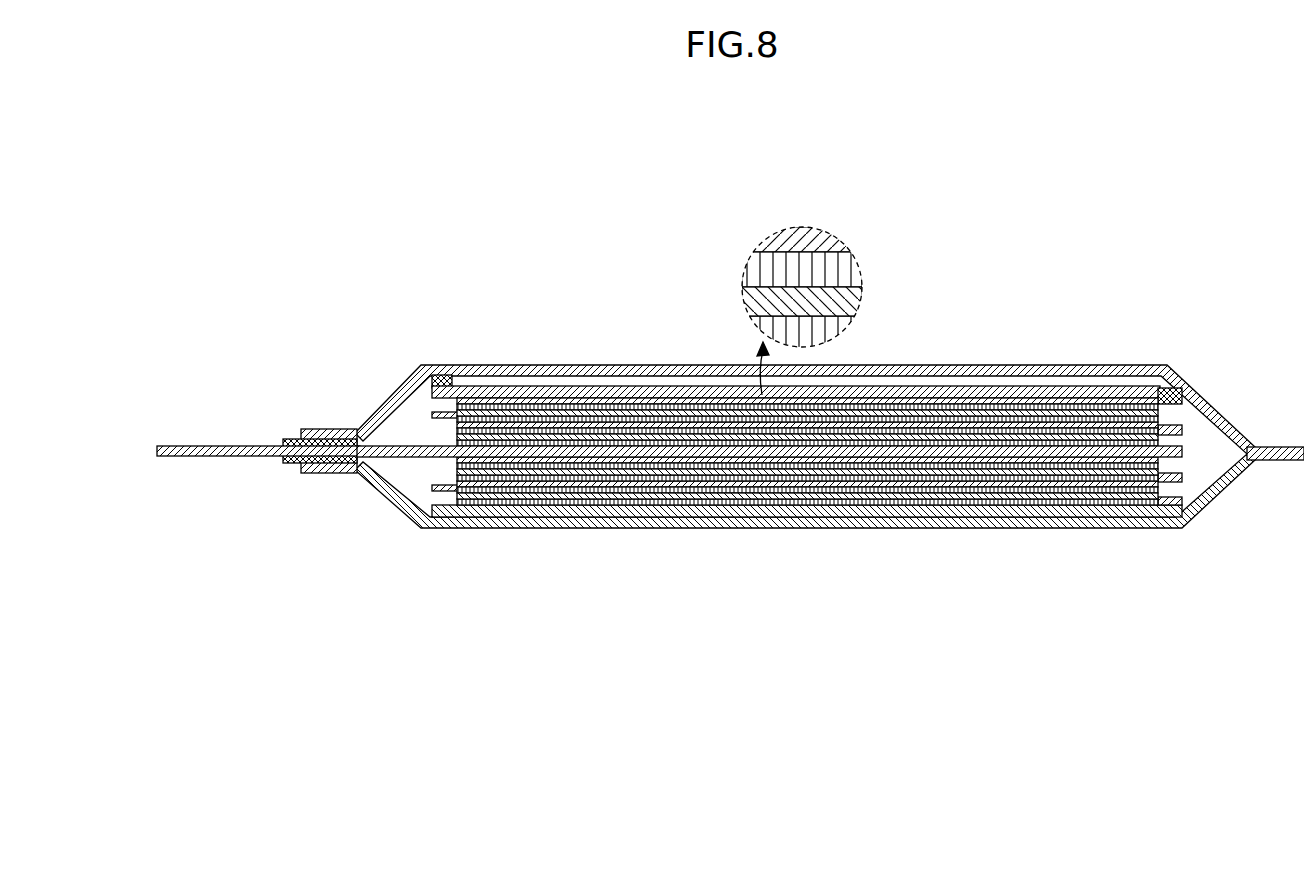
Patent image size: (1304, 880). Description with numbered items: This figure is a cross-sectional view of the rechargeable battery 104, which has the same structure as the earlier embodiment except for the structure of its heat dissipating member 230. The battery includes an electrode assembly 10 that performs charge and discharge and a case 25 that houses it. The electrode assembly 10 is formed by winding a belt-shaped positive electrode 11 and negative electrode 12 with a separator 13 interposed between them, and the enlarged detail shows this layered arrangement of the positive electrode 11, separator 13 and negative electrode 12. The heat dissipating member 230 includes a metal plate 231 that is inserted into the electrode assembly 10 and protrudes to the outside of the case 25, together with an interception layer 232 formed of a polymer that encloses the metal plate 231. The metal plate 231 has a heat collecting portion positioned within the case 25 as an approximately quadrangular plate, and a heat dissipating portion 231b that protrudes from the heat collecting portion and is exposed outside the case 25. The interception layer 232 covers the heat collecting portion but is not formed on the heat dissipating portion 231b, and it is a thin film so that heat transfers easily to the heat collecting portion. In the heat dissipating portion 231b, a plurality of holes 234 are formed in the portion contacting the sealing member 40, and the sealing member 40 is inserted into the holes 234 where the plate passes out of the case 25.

The rechargeable battery 104 is at (714, 117).
The electrode assembly 10 is at (807, 336).
The positive electrode 11 is at (528, 400).
The negative electrode 12 is at (517, 314).
The separator 13 is at (562, 400).
The case 25 is at (1087, 366).
The heat dissipating member 230 is at (669, 476).
The metal plate 231 is at (740, 457).
The heat dissipating portion 231b is at (178, 446).
The interception layer 232 is at (564, 457).
The holes 234 is at (338, 429).
The sealing member 40 is at (322, 466).